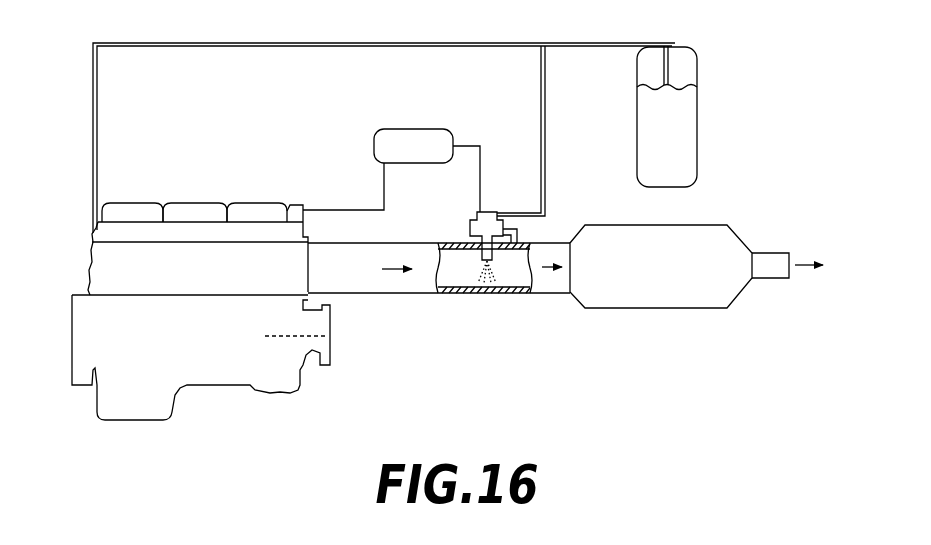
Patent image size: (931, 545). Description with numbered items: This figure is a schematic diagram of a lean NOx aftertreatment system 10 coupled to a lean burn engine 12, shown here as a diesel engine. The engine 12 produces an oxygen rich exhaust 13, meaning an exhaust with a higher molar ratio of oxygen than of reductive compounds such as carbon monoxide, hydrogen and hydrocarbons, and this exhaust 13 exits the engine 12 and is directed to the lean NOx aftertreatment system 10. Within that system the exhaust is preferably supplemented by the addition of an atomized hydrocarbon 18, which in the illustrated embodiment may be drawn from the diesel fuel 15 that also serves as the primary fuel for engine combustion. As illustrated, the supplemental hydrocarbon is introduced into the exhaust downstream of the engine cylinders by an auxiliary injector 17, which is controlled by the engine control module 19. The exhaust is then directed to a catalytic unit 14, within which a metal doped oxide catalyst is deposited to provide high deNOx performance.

The lean NOx aftertreatment system 10 is at (485, 352).
The lean burn engine 12 is at (188, 205).
The oxygen rich exhaust 13 is at (336, 279).
The catalytic unit 14 is at (660, 310).
The diesel fuel 15 is at (684, 126).
The auxiliary injector 17 is at (495, 210).
The atomized hydrocarbon 18 is at (488, 295).
The engine control module 19 is at (403, 128).